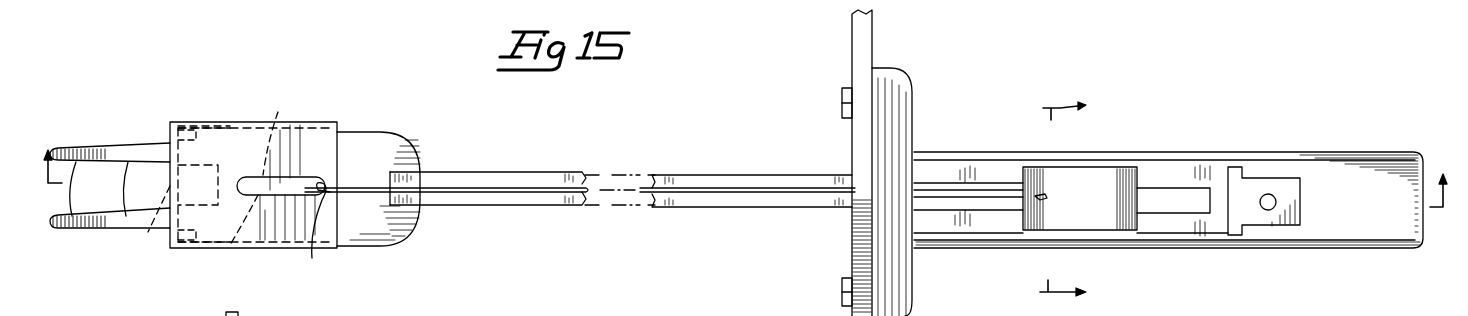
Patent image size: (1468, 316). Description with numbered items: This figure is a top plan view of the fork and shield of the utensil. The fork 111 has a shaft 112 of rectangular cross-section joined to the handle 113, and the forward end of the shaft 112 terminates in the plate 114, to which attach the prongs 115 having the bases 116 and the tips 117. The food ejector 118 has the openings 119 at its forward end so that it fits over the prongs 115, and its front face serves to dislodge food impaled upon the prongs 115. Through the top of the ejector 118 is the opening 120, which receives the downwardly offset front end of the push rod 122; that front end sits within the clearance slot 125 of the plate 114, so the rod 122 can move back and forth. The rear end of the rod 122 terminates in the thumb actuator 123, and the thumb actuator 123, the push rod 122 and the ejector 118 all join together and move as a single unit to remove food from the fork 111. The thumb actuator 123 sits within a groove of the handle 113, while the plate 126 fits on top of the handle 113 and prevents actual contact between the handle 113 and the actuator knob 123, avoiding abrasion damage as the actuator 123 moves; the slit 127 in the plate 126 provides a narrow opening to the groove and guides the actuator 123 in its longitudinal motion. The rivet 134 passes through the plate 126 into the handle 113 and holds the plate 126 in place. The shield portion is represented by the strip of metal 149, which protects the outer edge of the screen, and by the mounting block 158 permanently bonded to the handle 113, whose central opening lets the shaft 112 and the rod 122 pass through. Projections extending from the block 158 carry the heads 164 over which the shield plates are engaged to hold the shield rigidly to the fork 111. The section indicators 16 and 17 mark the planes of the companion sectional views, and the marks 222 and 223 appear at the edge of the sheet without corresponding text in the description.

The fork 111 is at (537, 165).
The shaft 112 is at (566, 205).
The handle 113 is at (1367, 242).
The plate 114 is at (366, 138).
The prongs 115 is at (127, 145).
The bases 116 is at (205, 125).
The tips 117 is at (73, 145).
The food ejector 118 is at (250, 135).
The openings 119 is at (151, 223).
The opening 120 is at (283, 230).
The push rod 122 is at (725, 186).
The thumb actuator 123 is at (1097, 165).
The clearance slot 125 is at (267, 166).
The plate 126 is at (1232, 172).
The slit 127 is at (1172, 190).
The rivet 134 is at (1272, 198).
The strip of metal 149 is at (856, 46).
The mounting block 158 is at (898, 90).
The heads 164 is at (843, 106).
The section line 16 is at (746, 194).
The section line 17 is at (1065, 197).
The element 222 is at (1220, 310).
The element 223 is at (253, 304).